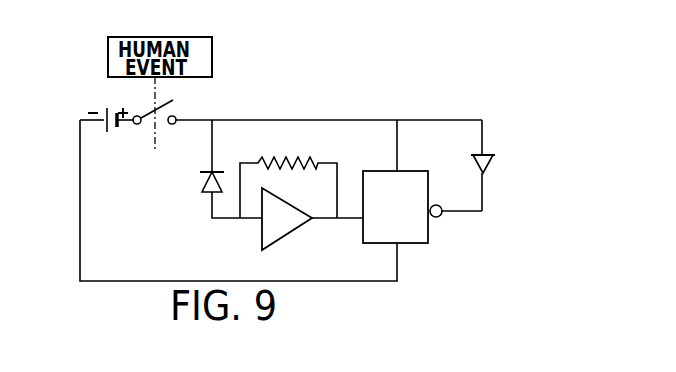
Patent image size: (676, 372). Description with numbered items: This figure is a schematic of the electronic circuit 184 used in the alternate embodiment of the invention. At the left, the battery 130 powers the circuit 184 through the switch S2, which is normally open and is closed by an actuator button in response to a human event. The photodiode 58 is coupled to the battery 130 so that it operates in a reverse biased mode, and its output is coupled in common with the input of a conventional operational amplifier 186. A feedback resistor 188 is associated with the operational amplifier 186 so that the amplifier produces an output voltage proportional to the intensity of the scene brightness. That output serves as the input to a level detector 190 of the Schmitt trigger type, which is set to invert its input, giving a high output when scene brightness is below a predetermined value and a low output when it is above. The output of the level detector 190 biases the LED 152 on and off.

The battery 130 is at (107, 107).
The switch S2 is at (177, 106).
The electronic circuit 184 is at (296, 101).
The photodiode 58 is at (203, 180).
The feedback resistor 188 is at (290, 160).
The operational amplifier 186 is at (296, 228).
The level detector 190 is at (405, 169).
The LED 152 is at (483, 153).